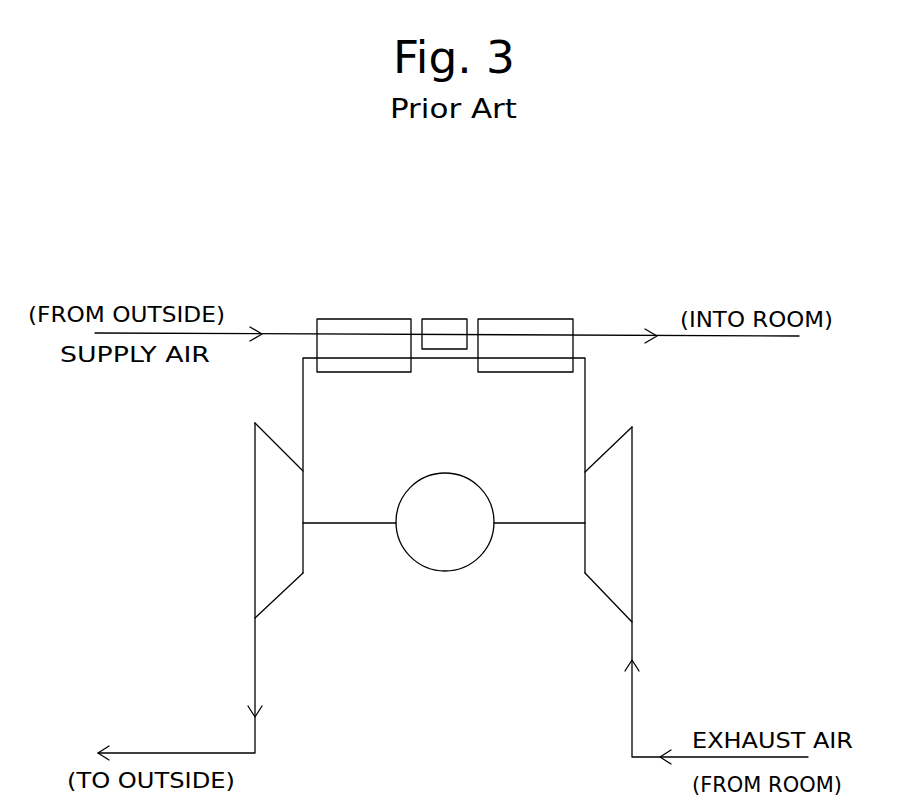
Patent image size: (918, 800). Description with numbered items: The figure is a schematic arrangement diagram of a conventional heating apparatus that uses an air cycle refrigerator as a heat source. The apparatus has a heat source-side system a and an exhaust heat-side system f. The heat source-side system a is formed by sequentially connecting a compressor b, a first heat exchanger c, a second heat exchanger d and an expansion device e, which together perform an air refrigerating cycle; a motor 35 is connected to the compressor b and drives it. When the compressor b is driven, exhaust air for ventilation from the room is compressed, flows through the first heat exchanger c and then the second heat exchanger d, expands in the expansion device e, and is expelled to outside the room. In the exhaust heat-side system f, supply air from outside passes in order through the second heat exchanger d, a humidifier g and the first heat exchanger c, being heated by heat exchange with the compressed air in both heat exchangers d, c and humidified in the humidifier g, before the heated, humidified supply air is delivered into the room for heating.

The heat source-side system a is at (587, 382).
The compressor b is at (632, 538).
The first heat exchanger c is at (517, 319).
The second heat exchanger d is at (372, 319).
The expansion device e is at (255, 533).
The exhaust heat-side system f is at (610, 336).
The humidifier g is at (442, 319).
The motor 35 is at (447, 571).